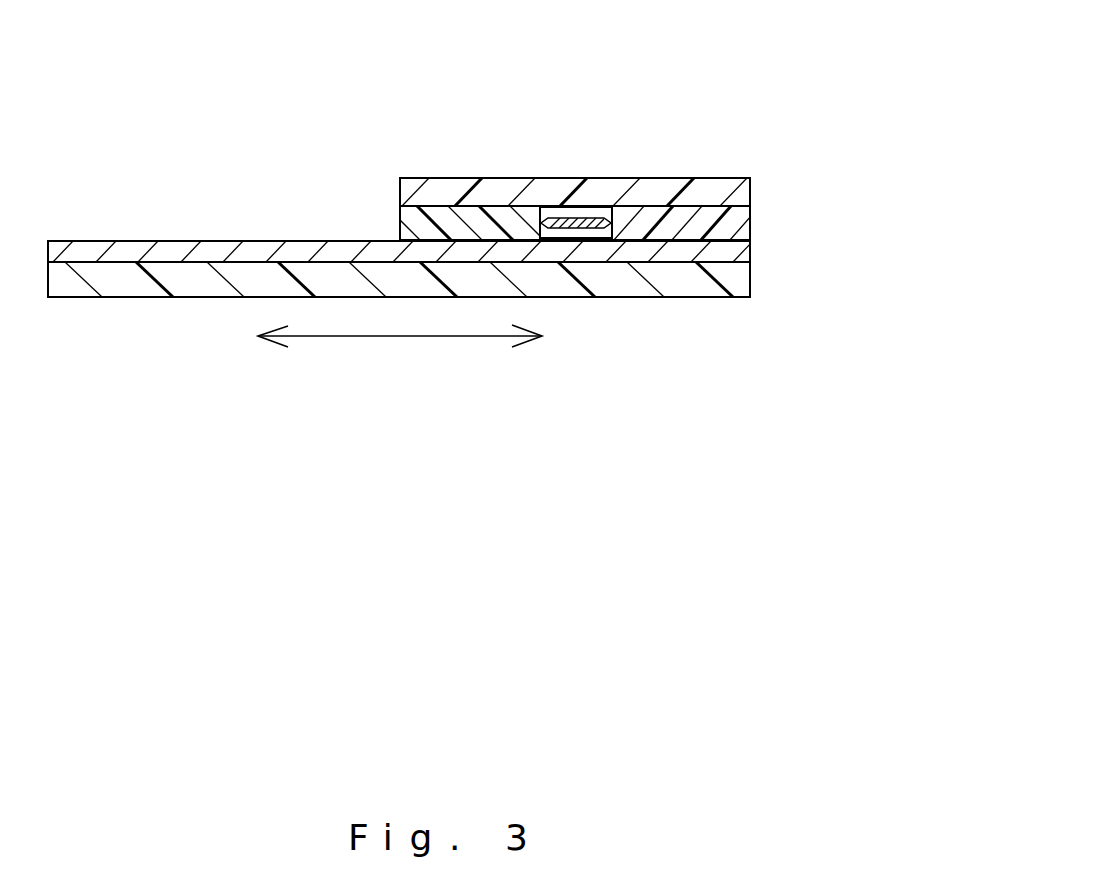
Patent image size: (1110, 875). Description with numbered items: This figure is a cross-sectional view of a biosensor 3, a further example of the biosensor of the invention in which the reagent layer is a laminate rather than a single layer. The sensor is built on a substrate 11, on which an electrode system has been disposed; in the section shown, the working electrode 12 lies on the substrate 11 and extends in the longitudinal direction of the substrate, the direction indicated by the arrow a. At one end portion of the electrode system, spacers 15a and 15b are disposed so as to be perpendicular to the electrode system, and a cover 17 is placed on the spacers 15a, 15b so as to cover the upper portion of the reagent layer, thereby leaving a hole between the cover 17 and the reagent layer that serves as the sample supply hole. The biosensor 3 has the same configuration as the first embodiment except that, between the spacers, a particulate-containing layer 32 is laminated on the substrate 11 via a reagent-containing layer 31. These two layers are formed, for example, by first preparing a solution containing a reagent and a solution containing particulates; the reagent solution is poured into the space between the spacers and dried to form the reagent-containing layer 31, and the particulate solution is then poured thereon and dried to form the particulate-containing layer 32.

The biosensor 3 is at (740, 121).
The substrate 11 is at (743, 277).
The working electrode 12 is at (752, 247).
The spacer 15a is at (752, 220).
The spacer 15b is at (412, 219).
The cover 17 is at (752, 182).
The reagent-containing layer 31 is at (582, 238).
The particulate-containing layer 32 is at (580, 228).
The longitudinal direction a is at (393, 337).